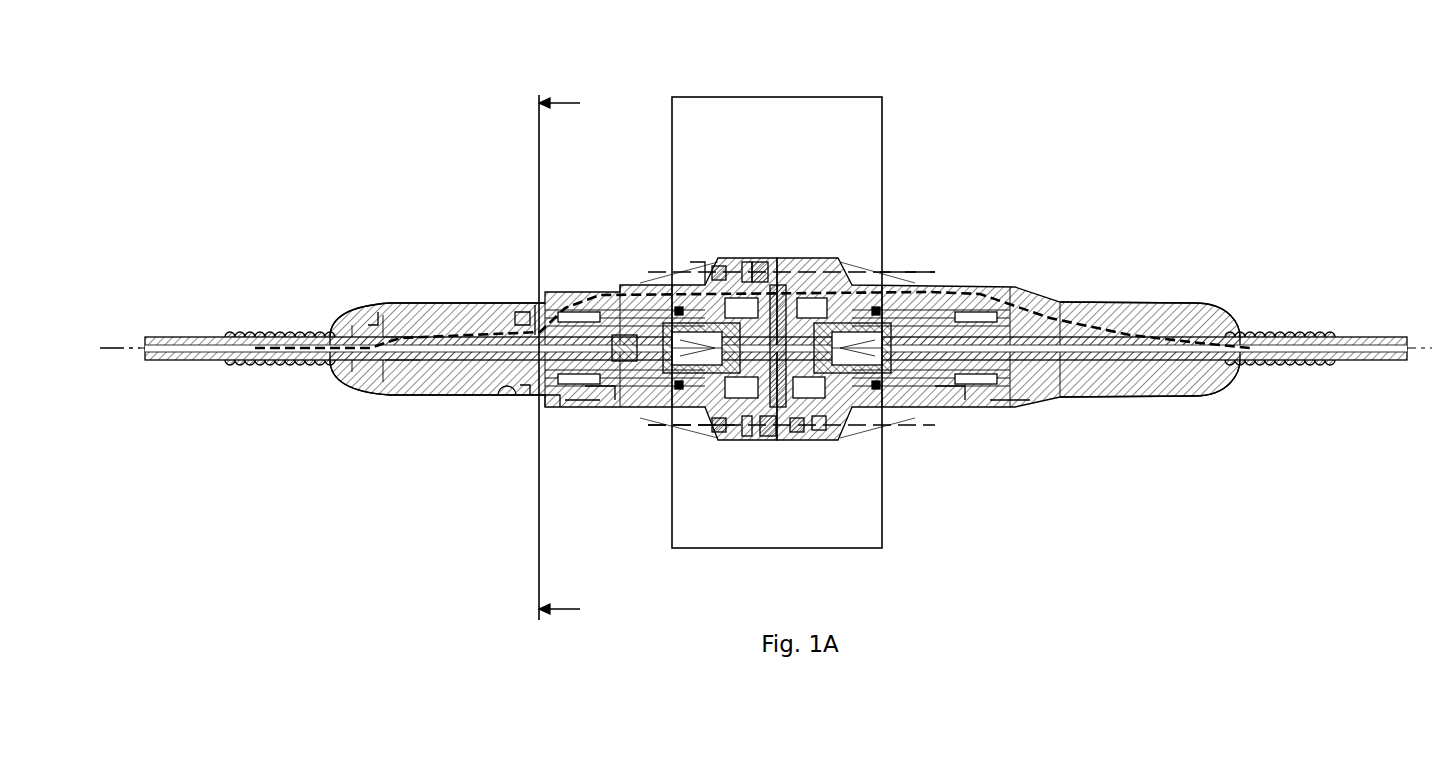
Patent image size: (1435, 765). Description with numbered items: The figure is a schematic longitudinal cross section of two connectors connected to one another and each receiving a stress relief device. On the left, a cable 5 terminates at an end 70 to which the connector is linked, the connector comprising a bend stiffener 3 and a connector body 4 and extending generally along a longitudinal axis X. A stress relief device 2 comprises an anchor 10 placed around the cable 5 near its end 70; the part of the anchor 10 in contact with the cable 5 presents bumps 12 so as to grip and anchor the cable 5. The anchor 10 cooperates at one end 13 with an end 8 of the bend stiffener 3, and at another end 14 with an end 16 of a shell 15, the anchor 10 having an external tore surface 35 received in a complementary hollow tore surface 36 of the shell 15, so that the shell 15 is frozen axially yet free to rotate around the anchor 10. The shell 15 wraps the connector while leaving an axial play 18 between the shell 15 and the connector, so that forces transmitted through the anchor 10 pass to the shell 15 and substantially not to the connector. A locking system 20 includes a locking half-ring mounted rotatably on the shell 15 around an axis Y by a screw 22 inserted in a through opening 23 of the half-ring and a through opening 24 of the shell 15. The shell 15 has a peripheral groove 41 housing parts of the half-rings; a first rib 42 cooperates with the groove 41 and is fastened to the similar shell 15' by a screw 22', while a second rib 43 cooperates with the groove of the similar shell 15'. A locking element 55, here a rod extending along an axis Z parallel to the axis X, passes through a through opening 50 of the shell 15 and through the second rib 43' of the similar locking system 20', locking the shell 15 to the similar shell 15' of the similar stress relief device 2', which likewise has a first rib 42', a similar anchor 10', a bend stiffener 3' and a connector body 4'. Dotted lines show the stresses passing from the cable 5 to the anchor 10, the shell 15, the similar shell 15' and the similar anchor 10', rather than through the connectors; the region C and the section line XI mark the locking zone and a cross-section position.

The stress relief device 2 is at (553, 376).
The similar stress relief device 2' is at (1008, 308).
The bend stiffener 3 is at (318, 373).
The bend stiffener of the complementary connector 3' is at (1214, 380).
The connector body 4 is at (601, 425).
The connector body of the complementary connector 4' is at (941, 443).
The cable 5 is at (170, 362).
The end of the bend stiffener 8 is at (380, 318).
The anchor 10 is at (457, 378).
The similar anchor 10' is at (1127, 313).
The bumps 12 is at (383, 322).
The end of the anchor 13 is at (385, 356).
The other end of the anchor 14 is at (527, 320).
The shell 15 is at (582, 457).
The similar shell 15' is at (1024, 437).
The end of the shell 16 is at (535, 312).
The axial play 18 is at (548, 406).
The locking system 20 is at (759, 398).
The similar locking system 20' is at (768, 229).
The screw 22 is at (705, 471).
The screw of the similar locking system 22' is at (813, 461).
The through opening of the locking half-ring 23 is at (745, 430).
The through opening of the shell 24 is at (735, 427).
The external tore surface 35 is at (516, 398).
The complementary hollow tore surface 36 is at (523, 400).
The peripheral groove 41 is at (740, 262).
The first rib 42 is at (784, 476).
The first rib of the similar locking half-ring 42' is at (844, 464).
The second rib 43 is at (844, 285).
The second rib of the similar stress relief device 43' is at (733, 214).
The through opening of the shell 50 is at (722, 262).
The locking element 55 is at (705, 262).
The end of the cable 70 is at (624, 345).
The coupling region C is at (882, 118).
The longitudinal axis X is at (112, 352).
The axis Y is at (656, 428).
The axis Z is at (907, 270).
The section line XI is at (572, 356).